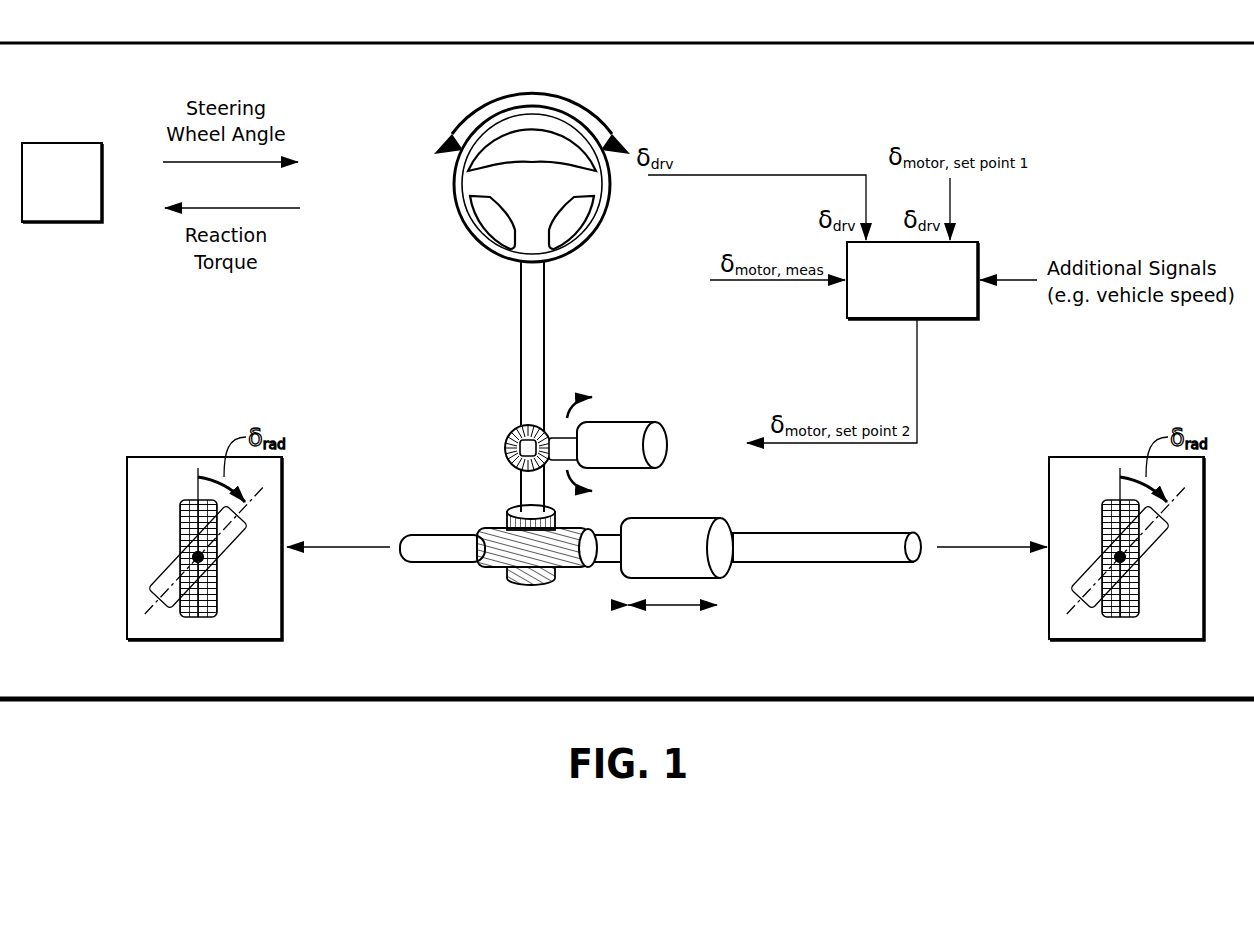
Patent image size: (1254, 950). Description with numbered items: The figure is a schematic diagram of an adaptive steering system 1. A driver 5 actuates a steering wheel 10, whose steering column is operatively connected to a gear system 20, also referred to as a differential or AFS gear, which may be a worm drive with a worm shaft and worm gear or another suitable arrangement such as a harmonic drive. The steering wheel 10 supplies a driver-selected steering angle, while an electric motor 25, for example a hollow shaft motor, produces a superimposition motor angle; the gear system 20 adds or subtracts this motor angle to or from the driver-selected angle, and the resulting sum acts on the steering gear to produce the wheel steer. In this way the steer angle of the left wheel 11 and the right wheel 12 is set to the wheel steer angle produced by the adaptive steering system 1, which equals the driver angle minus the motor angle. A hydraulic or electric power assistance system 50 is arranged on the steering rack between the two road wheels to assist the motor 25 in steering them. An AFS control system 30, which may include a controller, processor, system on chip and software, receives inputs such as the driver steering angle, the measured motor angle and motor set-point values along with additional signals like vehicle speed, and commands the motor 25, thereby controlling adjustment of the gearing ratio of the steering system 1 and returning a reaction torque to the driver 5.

The adaptive steering system 1 is at (786, 43).
The driver 5 is at (62, 182).
The steering wheel 10 is at (580, 254).
The left wheel 11 is at (172, 457).
The right wheel 12 is at (1094, 457).
The gear system 20 is at (508, 432).
The electric motor 25 is at (622, 421).
The AFS control system 30 is at (968, 242).
The power assistance system 50 is at (660, 577).